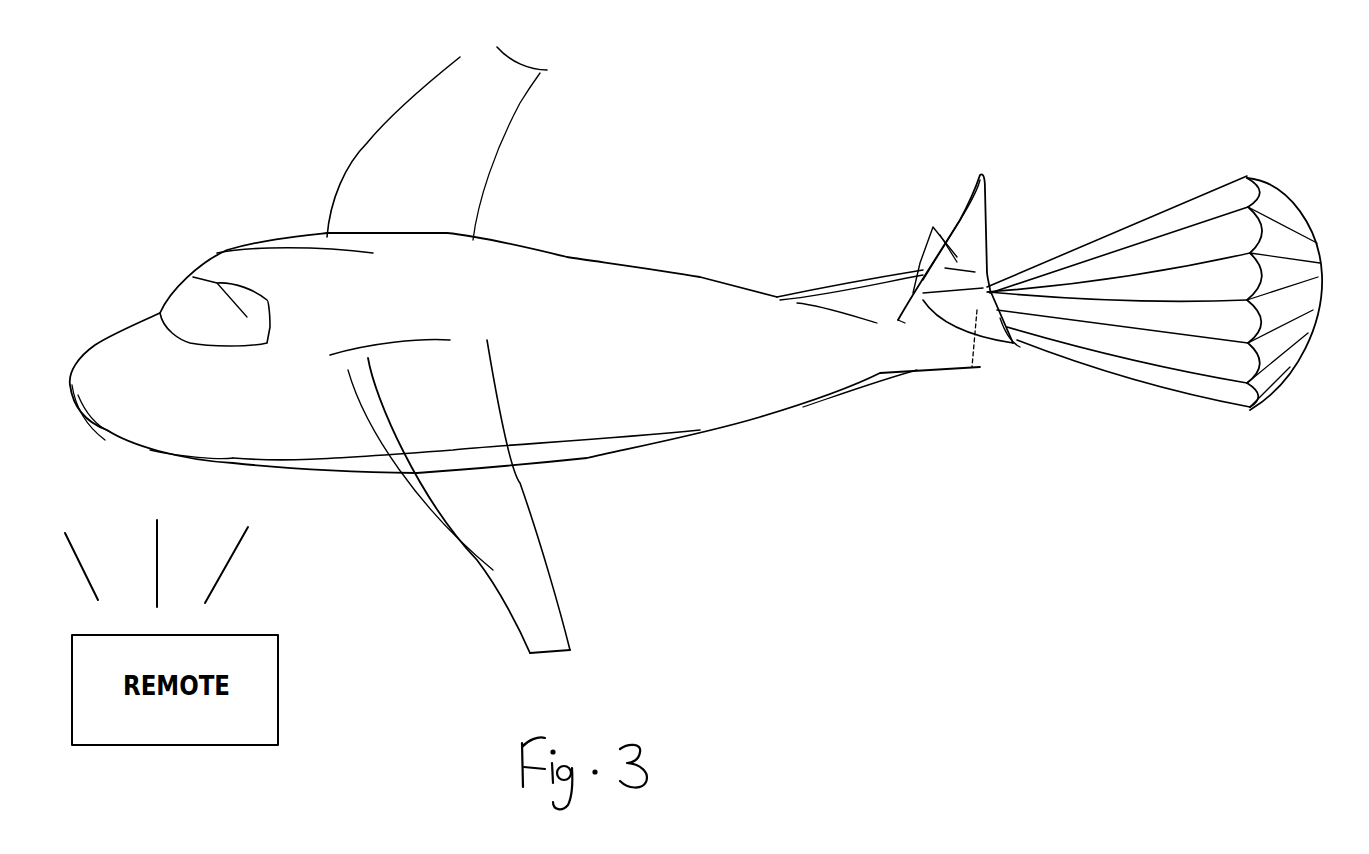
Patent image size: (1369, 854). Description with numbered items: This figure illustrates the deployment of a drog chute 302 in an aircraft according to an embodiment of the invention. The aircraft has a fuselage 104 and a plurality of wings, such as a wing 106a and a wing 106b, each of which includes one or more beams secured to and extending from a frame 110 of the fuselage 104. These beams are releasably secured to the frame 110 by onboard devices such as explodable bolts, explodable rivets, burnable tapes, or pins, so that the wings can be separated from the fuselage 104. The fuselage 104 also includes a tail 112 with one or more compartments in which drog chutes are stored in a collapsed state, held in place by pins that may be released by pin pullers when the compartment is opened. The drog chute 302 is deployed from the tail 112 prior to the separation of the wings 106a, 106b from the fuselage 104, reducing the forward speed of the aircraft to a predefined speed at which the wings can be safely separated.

The fuselage 104 is at (630, 273).
The wing 106a is at (488, 155).
The wing 106b is at (540, 593).
The frame 110 is at (563, 462).
The tail 112 is at (987, 187).
The drog chute 302 is at (1268, 181).